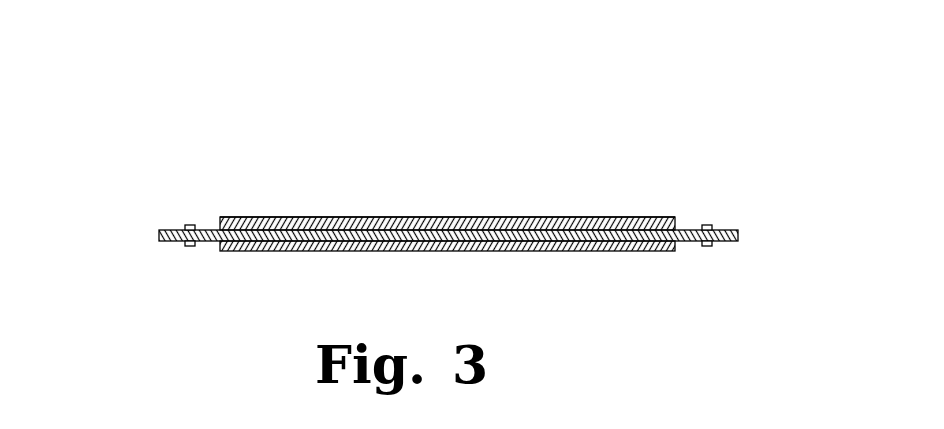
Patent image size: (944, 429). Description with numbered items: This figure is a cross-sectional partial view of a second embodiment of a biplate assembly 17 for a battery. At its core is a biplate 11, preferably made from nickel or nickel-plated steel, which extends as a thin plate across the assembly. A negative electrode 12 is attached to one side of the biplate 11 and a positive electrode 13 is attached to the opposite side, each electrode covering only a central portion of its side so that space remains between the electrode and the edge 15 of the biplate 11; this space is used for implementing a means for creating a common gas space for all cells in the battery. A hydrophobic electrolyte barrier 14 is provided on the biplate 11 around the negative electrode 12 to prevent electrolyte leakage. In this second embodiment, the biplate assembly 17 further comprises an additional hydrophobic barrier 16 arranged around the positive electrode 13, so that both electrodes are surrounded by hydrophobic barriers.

The biplate 11 is at (403, 218).
The negative electrode 12 is at (495, 218).
The positive electrode 13 is at (520, 251).
The hydrophobic electrolyte barrier 14 is at (190, 225).
The edge of the biplate 15 is at (740, 231).
The additional hydrophobic barrier 16 is at (190, 246).
The biplate assembly 17 is at (172, 124).